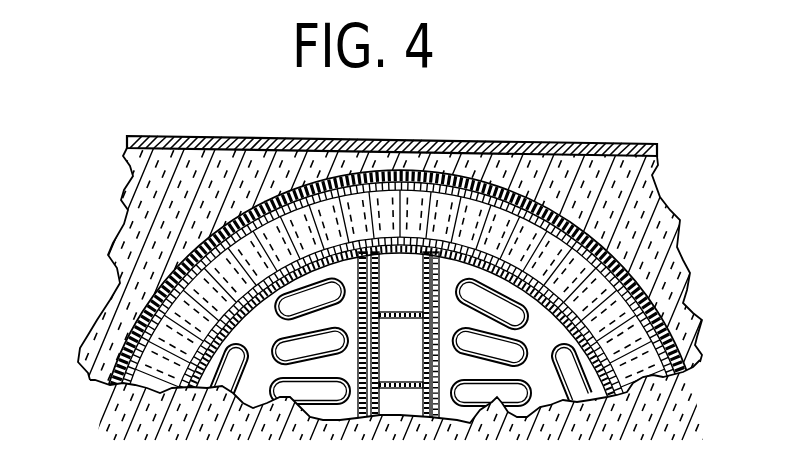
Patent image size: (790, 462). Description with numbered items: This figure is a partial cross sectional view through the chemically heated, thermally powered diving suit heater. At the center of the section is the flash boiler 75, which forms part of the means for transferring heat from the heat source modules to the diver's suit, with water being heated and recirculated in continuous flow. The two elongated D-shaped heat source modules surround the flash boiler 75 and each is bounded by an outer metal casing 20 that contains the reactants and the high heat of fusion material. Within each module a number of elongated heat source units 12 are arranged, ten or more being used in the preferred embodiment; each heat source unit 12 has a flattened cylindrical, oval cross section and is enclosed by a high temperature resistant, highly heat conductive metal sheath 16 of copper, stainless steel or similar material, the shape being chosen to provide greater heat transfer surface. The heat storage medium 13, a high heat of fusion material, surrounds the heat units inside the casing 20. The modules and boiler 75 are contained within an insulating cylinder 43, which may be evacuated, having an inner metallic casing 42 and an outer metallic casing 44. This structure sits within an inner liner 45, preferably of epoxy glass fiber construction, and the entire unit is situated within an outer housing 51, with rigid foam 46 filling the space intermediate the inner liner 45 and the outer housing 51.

The outer housing 51 is at (150, 137).
The rigid foam 46 is at (90, 373).
The inner liner 45 is at (680, 370).
The outer metallic casing 44 is at (121, 382).
The insulating cylinder 43 is at (647, 375).
The inner metallic casing 42 is at (615, 393).
The outer metal casing 20 is at (186, 387).
The heat storage medium 13 is at (260, 338).
The flash boiler 75 is at (388, 362).
The heat source unit 12 is at (491, 398).
The metal sheath 16 is at (537, 405).